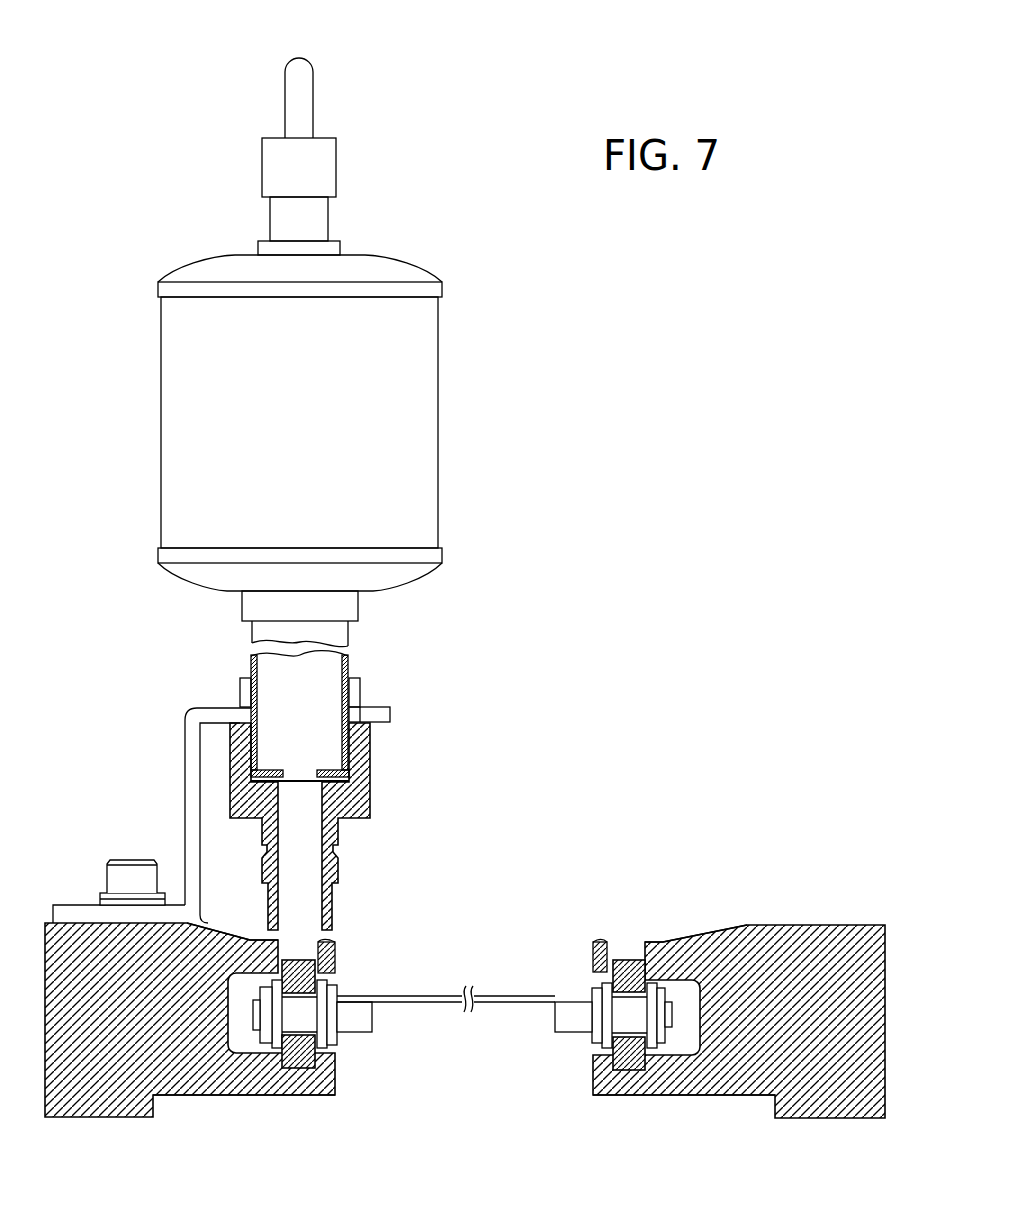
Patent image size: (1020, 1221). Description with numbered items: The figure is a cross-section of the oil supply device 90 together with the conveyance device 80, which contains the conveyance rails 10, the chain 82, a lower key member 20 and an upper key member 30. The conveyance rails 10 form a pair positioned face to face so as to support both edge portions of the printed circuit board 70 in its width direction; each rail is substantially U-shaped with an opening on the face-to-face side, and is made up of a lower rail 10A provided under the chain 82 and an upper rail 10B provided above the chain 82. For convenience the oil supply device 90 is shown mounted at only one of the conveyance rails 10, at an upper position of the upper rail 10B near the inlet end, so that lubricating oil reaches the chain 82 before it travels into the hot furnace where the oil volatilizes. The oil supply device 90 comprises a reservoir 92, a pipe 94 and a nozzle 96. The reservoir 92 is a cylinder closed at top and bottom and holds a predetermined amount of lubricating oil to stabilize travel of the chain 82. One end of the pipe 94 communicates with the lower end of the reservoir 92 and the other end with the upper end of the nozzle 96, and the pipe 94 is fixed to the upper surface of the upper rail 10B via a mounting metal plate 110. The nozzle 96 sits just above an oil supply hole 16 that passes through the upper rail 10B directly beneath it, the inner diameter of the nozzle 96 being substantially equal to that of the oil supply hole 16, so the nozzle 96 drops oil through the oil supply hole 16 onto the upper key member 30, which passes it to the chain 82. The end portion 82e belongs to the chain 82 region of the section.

The conveyance rail 10 is at (127, 1117).
The lower rail 10A is at (243, 1095).
The upper rail 10B is at (257, 937).
The oil supply hole 16 is at (322, 942).
The lower key member 20 is at (302, 1070).
The upper key member 30 is at (336, 966).
The printed circuit board 70 is at (450, 994).
The conveyance device 80 is at (549, 872).
The chain 82 is at (352, 1045).
The bolt end portion 82e is at (373, 1018).
The oil supply device 90 is at (342, 352).
The reservoir 92 is at (438, 445).
The pipe 94 is at (348, 663).
The nozzle 96 is at (330, 903).
The mounting metal plate 110 is at (185, 795).